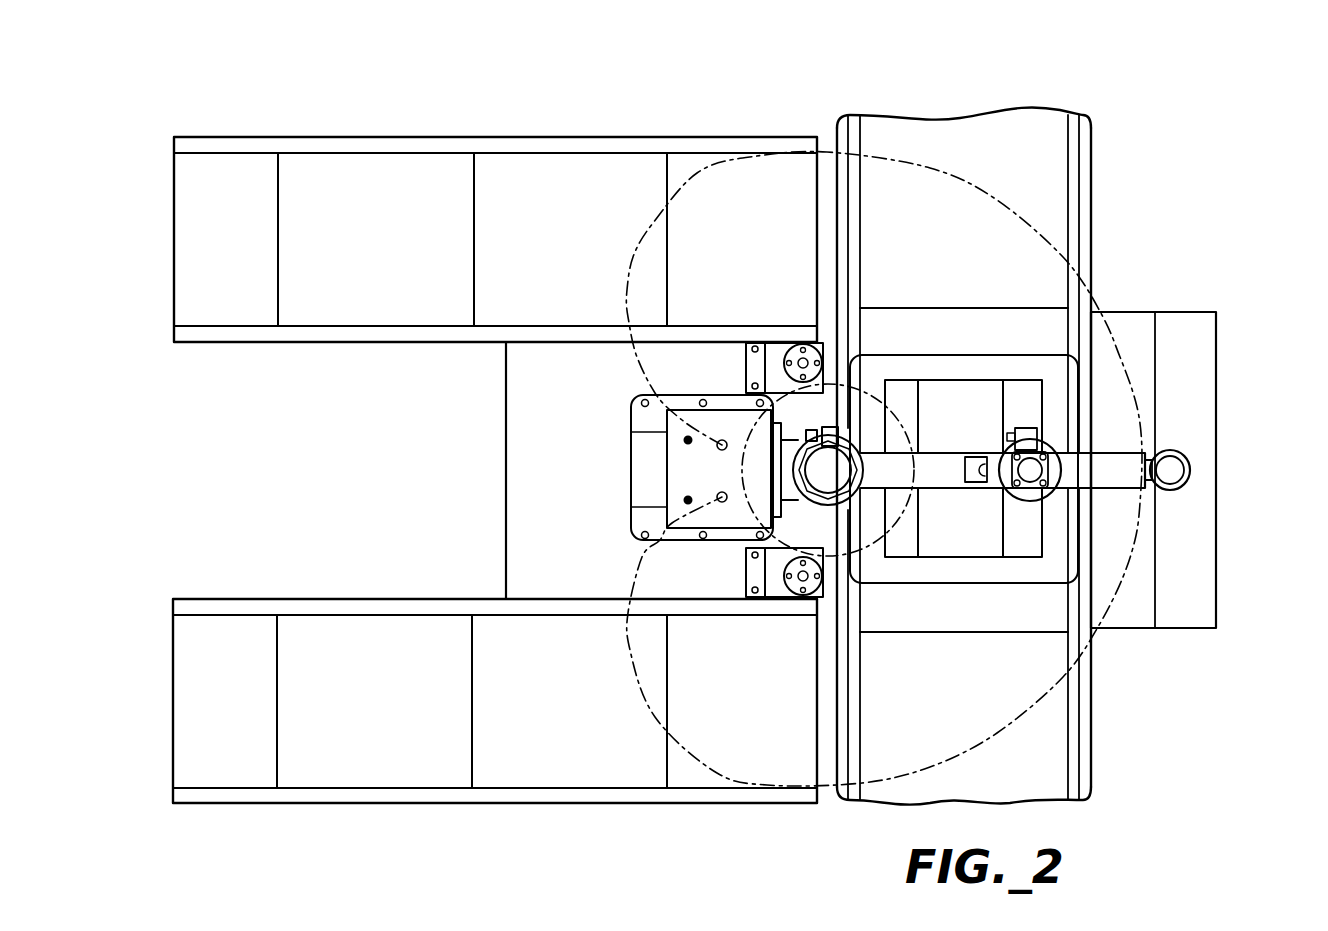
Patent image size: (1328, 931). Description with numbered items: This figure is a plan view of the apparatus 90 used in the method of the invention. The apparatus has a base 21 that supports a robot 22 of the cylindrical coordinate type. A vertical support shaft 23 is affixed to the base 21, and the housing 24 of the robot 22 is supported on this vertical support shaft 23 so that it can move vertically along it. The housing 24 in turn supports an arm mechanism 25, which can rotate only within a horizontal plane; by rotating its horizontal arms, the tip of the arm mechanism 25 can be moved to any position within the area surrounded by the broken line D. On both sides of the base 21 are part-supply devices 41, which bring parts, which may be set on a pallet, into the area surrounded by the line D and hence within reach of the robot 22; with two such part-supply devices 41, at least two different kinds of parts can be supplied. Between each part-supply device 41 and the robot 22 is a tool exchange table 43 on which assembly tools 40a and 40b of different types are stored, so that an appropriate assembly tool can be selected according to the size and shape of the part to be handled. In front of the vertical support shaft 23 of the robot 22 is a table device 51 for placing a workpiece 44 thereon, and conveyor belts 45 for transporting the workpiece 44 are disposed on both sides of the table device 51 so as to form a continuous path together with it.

The apparatus 90 is at (272, 472).
The base 21 is at (517, 532).
The robot 22 is at (1193, 470).
The vertical support shaft 23 is at (642, 483).
The housing 24 is at (745, 423).
The arm mechanism 25 is at (1128, 458).
The assembly tool 40a is at (830, 352).
The assembly tool 40b is at (828, 590).
The part-supply devices 41 is at (750, 190).
The tool exchange table 43 is at (790, 348).
The workpiece 44 is at (965, 395).
The conveyor belts 45 is at (1005, 122).
The table device 51 is at (1045, 578).
The broken line D is at (1108, 328).